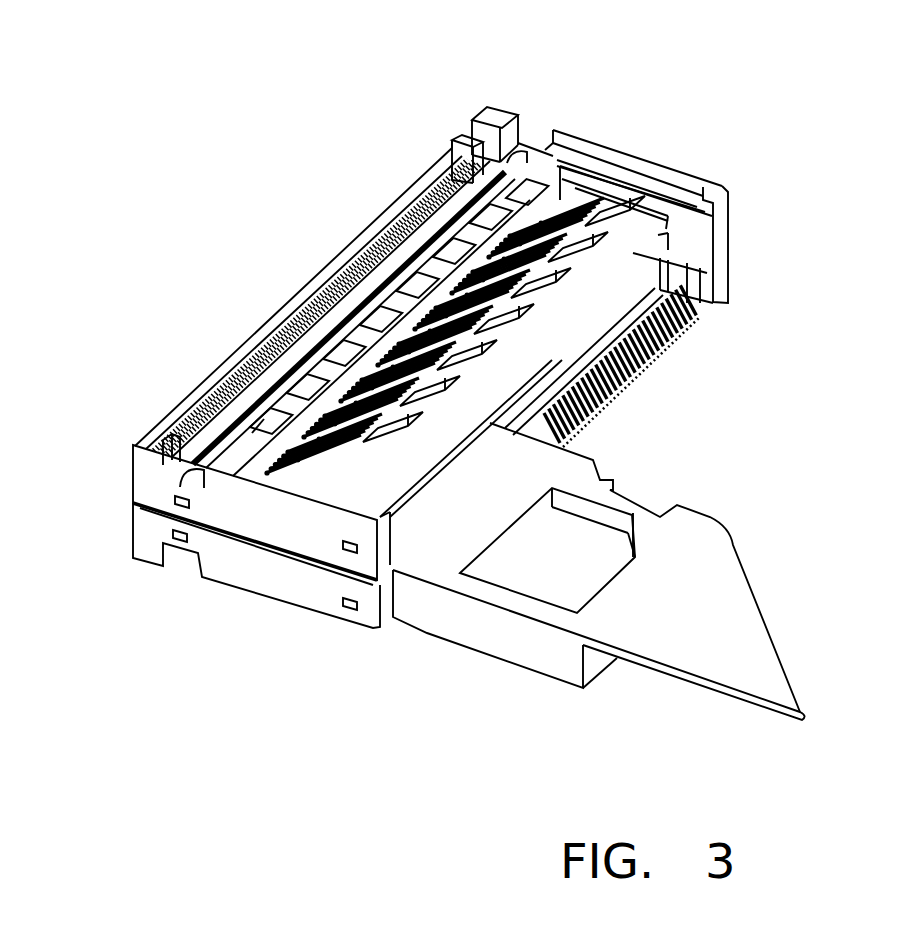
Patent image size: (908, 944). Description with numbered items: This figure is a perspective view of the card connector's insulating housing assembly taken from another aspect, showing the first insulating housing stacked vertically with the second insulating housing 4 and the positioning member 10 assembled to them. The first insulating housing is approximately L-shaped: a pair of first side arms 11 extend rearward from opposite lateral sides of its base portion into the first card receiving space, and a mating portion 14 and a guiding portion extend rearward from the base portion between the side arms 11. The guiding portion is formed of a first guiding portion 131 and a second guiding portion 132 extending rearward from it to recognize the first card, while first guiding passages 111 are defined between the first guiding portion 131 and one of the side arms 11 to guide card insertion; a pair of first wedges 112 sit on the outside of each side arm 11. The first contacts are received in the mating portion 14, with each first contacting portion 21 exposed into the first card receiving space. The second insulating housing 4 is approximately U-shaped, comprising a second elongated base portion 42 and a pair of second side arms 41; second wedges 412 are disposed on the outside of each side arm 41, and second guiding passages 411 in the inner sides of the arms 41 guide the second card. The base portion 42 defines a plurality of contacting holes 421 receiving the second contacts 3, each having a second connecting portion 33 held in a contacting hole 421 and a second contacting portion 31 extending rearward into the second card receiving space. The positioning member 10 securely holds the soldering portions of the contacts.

The positioning member 10 is at (258, 333).
The first side arms 11 is at (282, 587).
The first guiding passages 111 is at (710, 285).
The first wedges 112 is at (180, 543).
The first guiding portion 131 is at (497, 650).
The second guiding portion 132 is at (733, 610).
The mating portion 14 is at (632, 378).
The first contacting portion 21 is at (683, 330).
The second contacts 3 is at (543, 197).
The second contacting portion 31 is at (587, 227).
The second connecting portion 33 is at (447, 205).
The second insulating housing 4 is at (253, 520).
The second side arms 41 is at (713, 182).
The second guiding passages 411 is at (703, 227).
The second wedges 412 is at (372, 553).
The second elongated base portion 42 is at (220, 363).
The contacting holes 421 is at (498, 210).